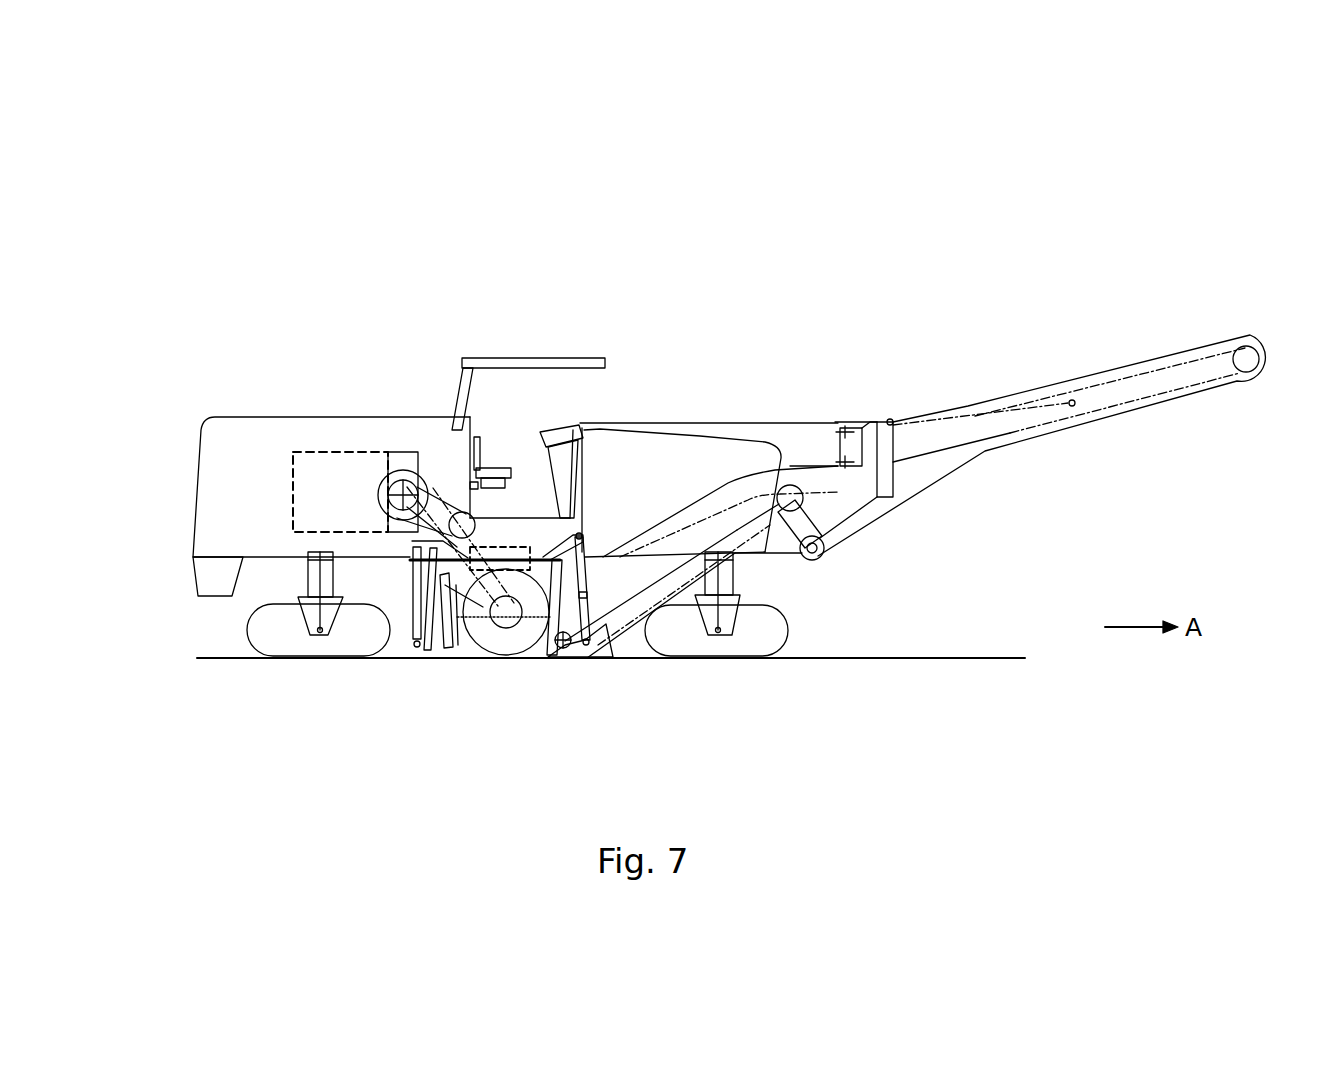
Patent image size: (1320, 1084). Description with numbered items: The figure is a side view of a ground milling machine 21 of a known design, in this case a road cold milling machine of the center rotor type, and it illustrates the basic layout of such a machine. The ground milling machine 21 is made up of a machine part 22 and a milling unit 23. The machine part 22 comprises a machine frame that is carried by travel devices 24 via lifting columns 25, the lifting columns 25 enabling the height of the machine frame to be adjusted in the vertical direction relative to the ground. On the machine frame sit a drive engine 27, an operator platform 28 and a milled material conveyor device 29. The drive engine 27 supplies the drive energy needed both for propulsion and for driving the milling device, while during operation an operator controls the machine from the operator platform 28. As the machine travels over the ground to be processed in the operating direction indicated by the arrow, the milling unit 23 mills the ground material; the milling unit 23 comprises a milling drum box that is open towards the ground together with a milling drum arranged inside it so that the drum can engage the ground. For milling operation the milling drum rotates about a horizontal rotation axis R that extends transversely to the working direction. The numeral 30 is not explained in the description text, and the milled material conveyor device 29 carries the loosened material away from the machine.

The ground milling machine 21 is at (866, 236).
The machine part 22 is at (232, 437).
The milling unit 23 is at (430, 640).
The travel devices 24 is at (266, 650).
The lifting columns 25 is at (313, 578).
The drive engine 27 is at (348, 462).
The operator platform 28 is at (543, 402).
The milled material conveyor device 29 is at (917, 491).
The milling drum 30 is at (503, 654).
The rotation axis R is at (507, 614).